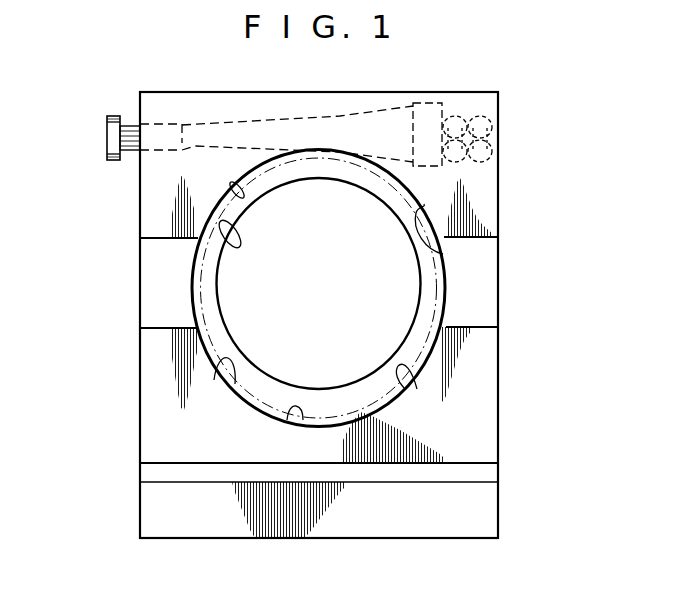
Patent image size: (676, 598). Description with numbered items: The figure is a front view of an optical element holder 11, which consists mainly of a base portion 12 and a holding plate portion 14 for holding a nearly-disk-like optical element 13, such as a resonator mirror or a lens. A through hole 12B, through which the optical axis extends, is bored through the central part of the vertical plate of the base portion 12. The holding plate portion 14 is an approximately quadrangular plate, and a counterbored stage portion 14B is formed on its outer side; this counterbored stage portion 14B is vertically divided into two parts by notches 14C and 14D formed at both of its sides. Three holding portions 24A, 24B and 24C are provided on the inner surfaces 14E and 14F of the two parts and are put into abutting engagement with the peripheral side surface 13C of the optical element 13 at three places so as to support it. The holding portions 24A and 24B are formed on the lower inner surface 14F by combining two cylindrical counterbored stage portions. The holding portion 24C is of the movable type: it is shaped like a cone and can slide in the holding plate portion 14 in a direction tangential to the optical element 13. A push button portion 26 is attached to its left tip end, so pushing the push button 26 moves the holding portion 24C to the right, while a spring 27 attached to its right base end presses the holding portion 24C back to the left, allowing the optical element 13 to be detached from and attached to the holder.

The optical element holder 11 is at (472, 65).
The base portion 12 is at (480, 508).
The through hole 12B is at (238, 232).
The optical element 13 is at (446, 297).
The peripheral side surface 13C is at (172, 311).
The holding plate portion 14 is at (486, 362).
The counterbored stage portion 14B is at (424, 204).
The notch 14C is at (485, 287).
The notch 14D is at (148, 293).
The upper inner surface 14E is at (196, 199).
The lower inner surface 14F is at (297, 412).
The holding portion 24A is at (403, 390).
The holding portion 24B is at (230, 370).
The holding portion 24C is at (294, 114).
The push button portion 26 is at (106, 126).
The spring 27 is at (476, 110).